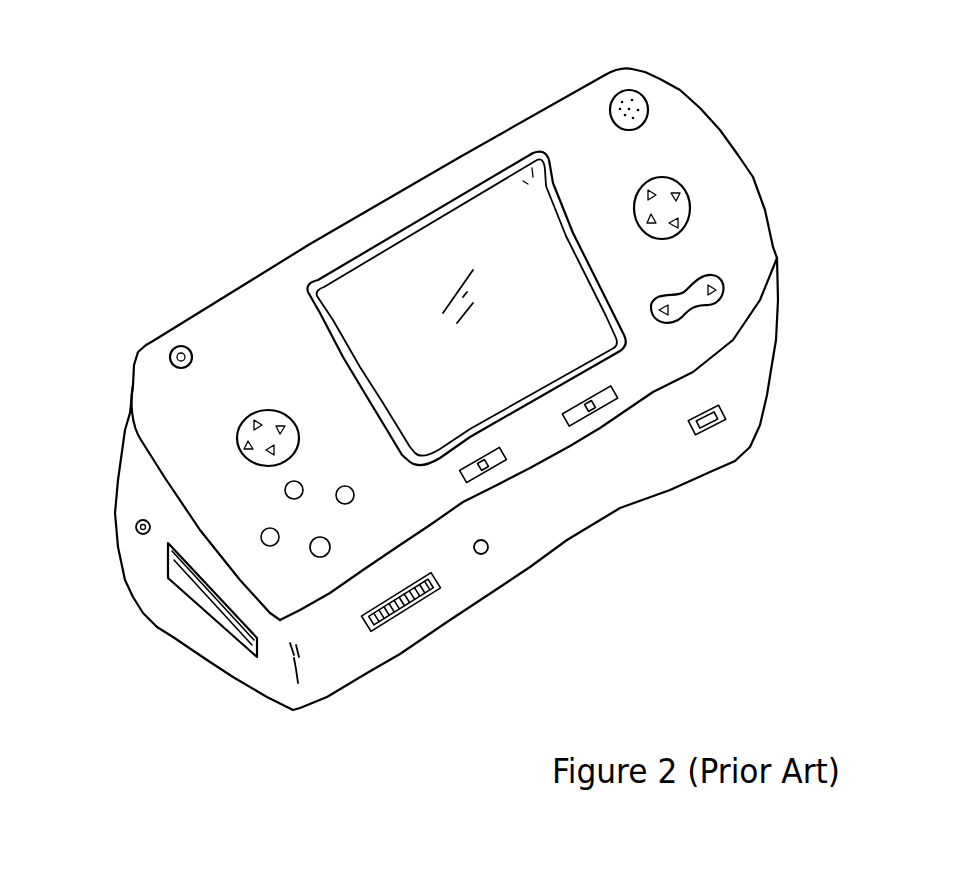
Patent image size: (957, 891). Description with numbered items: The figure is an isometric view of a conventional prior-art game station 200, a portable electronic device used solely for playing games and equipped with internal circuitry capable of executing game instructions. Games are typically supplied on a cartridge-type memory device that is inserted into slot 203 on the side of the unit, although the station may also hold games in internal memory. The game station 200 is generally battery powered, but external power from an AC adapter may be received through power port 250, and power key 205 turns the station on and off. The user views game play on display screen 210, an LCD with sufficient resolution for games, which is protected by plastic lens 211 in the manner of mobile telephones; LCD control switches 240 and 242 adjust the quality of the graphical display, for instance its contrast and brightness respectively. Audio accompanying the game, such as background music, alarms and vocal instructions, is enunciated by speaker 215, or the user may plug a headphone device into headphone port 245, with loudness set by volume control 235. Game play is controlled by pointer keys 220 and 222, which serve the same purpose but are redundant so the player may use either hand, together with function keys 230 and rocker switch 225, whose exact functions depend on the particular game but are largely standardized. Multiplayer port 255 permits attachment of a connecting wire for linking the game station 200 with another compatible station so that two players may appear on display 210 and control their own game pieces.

The game station 200 is at (152, 48).
The slot 203 is at (199, 612).
The power key 205 is at (185, 346).
The display screen 210 is at (533, 152).
The plastic lens 211 is at (448, 240).
The speaker 215 is at (640, 90).
The pointer key 220 is at (680, 177).
The pointer key 222 is at (237, 445).
The rocker switch 225 is at (690, 284).
The function keys 230 is at (318, 518).
The volume control 235 is at (427, 597).
The LCD control switch 240 is at (487, 463).
The LCD control switch 242 is at (588, 407).
The headphone port 245 is at (485, 555).
The power port 250 is at (140, 532).
The multiplayer port 255 is at (728, 409).